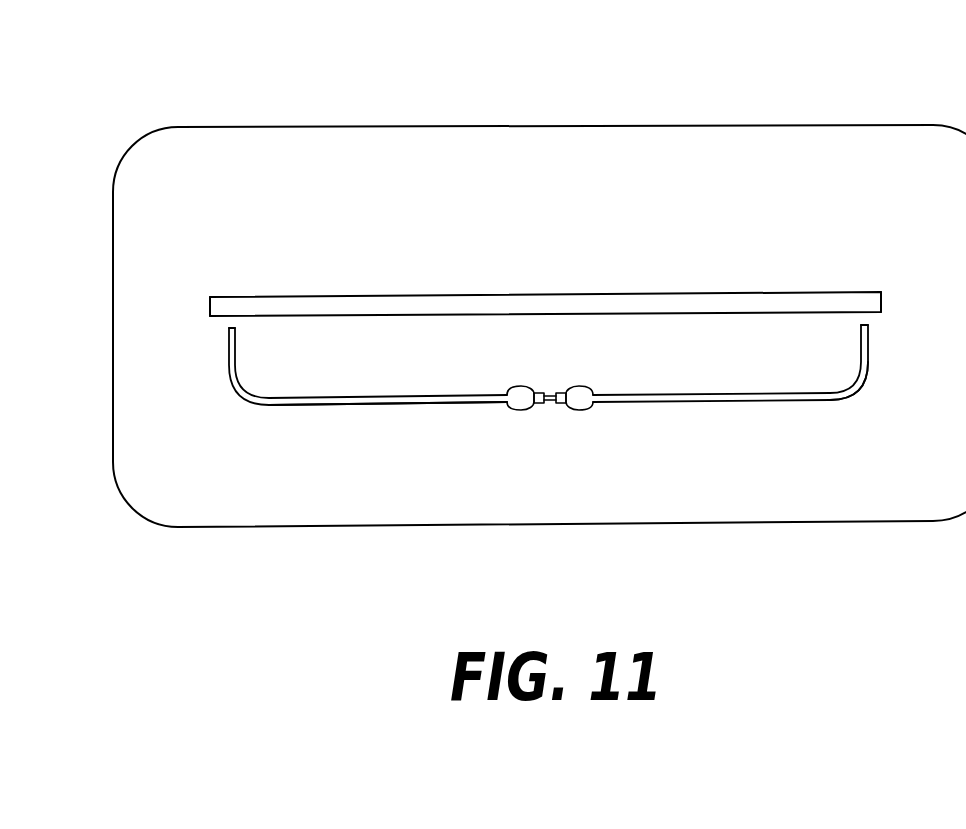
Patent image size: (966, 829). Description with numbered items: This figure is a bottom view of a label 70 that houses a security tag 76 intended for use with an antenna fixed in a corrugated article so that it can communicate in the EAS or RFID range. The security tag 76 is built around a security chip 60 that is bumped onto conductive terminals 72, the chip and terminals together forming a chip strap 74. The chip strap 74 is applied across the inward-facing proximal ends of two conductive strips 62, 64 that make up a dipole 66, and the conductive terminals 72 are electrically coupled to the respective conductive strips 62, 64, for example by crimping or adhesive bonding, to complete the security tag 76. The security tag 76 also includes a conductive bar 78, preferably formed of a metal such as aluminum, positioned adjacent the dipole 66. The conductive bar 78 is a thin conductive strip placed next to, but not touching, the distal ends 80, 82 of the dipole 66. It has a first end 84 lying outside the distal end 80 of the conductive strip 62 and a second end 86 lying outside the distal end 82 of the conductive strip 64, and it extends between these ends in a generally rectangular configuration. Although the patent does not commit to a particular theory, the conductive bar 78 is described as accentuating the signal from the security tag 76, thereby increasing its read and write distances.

The security chip 60 is at (551, 391).
The conductive strip 62 is at (229, 365).
The conductive strip 64 is at (870, 330).
The dipole 66 is at (866, 400).
The label 70 is at (533, 127).
The conductive terminals 72 is at (576, 400).
The chip strap 74 is at (538, 379).
The security tag 76 is at (459, 434).
The conductive bar 78 is at (533, 293).
The distal end 80 is at (237, 330).
The distal end 82 is at (860, 323).
The first end 84 is at (210, 306).
The second end 86 is at (881, 302).